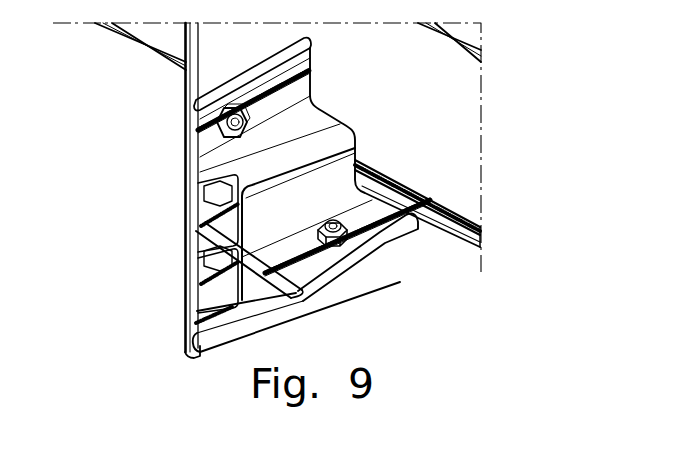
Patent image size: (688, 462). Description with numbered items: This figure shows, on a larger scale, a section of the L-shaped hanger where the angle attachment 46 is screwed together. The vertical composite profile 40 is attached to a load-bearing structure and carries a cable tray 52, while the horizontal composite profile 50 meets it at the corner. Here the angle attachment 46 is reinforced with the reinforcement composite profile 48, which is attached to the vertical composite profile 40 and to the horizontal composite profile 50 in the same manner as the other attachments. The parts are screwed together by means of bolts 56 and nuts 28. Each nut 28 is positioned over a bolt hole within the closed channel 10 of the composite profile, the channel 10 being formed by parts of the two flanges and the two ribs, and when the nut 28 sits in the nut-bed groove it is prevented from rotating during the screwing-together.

The closed channel 10 is at (190, 292).
The nut 28 is at (217, 115).
The vertical composite profile 40 is at (222, 33).
The angle attachment 46 is at (180, 338).
The reinforcement composite profile 48 is at (232, 158).
The horizontal composite profile 50 is at (328, 252).
The cable tray 52 is at (440, 130).
The bolt 56 is at (230, 136).